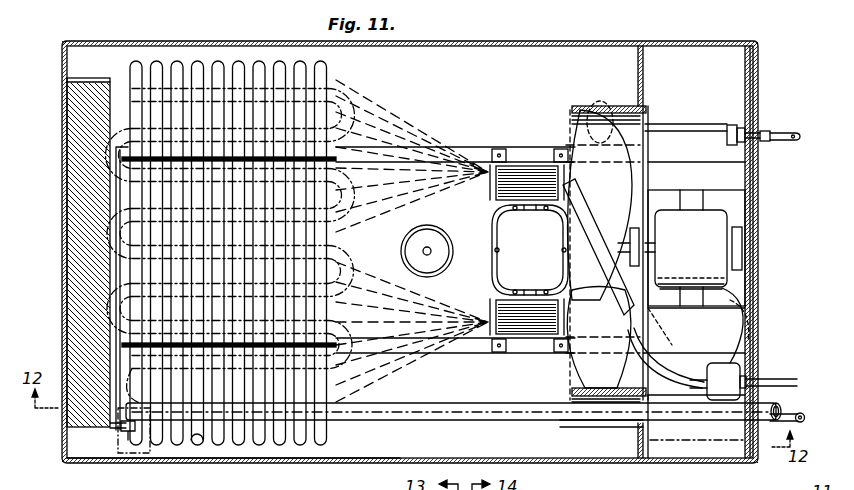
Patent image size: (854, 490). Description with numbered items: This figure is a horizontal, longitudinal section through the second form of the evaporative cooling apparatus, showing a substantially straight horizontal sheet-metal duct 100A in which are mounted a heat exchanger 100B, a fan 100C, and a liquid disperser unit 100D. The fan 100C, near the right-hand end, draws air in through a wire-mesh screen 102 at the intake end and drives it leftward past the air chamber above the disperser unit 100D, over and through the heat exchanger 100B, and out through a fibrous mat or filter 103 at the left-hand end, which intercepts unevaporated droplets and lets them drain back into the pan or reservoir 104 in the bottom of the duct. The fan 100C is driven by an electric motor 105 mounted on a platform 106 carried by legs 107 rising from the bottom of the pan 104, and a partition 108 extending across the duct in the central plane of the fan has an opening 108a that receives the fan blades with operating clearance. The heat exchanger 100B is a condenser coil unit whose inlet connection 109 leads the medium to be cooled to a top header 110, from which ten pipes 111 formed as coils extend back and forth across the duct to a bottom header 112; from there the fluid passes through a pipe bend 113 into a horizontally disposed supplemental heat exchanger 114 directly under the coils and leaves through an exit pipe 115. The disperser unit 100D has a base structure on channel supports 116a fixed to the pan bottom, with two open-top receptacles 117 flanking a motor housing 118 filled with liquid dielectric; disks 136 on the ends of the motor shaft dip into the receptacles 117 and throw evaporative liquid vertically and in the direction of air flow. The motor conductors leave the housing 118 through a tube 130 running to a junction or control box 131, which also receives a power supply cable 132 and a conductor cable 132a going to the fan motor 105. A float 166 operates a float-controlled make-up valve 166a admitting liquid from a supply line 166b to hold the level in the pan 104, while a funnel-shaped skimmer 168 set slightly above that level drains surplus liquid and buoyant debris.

The duct 100A is at (527, 35).
The heat exchanger 100B is at (196, 256).
The fan 100C is at (573, 363).
The liquid disperser unit 100D is at (506, 250).
The screen 102 is at (752, 237).
The mat or filter 103 is at (73, 240).
The pan or reservoir 104 is at (104, 447).
The electric motor 105 is at (714, 259).
The platform 106 is at (700, 201).
The legs 107 is at (726, 178).
The partition 108 is at (638, 73).
The opening 108a is at (640, 110).
The inlet connection 109 is at (742, 416).
The top header 110 is at (130, 423).
The pipes 111 is at (217, 60).
The bottom header 112 is at (191, 448).
The pipe bend 113 is at (152, 453).
The supplemental heat exchanger 114 is at (163, 220).
The exit pipe 115 is at (428, 425).
The channel supports 116a is at (467, 150).
The open top receptacles 117 is at (518, 162).
The motor housing 118 is at (512, 268).
The tube 130 is at (690, 358).
The junction or control box 131 is at (696, 426).
The power supply cable 132 is at (766, 385).
The conductor cable 132a is at (752, 348).
The disks 136 is at (540, 181).
The float 166 is at (598, 116).
The float controlled make-up valve 166a is at (730, 128).
The supply line 166b is at (790, 126).
The skimmer 168 is at (414, 249).